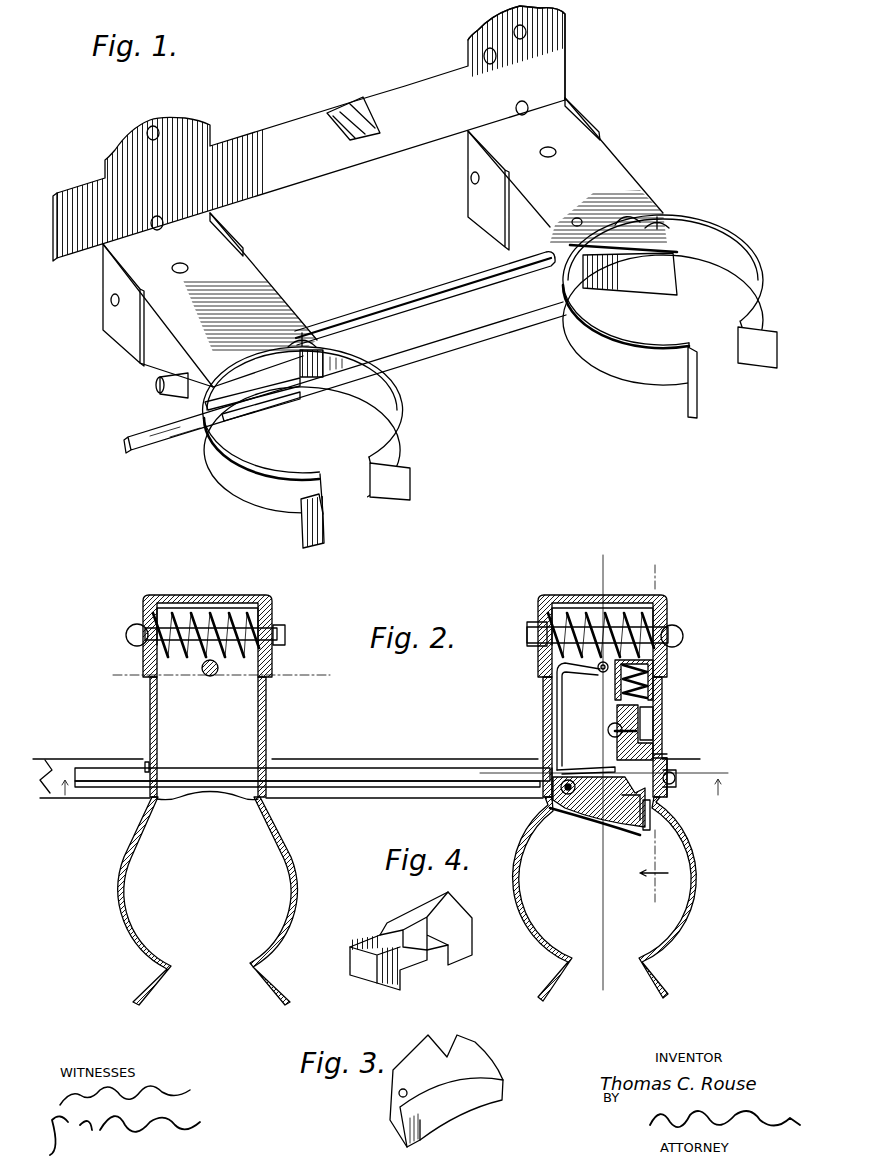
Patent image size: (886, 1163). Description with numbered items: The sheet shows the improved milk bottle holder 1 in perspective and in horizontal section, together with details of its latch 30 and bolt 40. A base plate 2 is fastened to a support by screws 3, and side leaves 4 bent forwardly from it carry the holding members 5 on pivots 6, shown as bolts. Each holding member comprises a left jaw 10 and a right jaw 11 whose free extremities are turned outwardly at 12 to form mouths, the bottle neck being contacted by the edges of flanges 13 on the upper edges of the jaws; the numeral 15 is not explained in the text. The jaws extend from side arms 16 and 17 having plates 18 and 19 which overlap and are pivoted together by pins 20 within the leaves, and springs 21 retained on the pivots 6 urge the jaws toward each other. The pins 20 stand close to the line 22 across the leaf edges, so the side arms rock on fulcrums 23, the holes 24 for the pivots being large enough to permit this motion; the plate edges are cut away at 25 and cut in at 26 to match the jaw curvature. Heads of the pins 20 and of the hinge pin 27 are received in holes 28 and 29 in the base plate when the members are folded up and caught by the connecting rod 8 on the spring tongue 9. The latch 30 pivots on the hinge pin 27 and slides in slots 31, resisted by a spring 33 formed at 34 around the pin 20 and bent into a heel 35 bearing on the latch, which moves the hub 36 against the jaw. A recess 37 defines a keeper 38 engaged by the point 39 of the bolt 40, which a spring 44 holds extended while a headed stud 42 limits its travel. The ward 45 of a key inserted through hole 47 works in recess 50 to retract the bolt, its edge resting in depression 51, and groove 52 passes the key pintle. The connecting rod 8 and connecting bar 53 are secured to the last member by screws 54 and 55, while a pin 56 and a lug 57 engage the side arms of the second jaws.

In FIG. 1, the holder 1 is at (398, 88).
In FIG. 1, the base plate 2 is at (282, 132).
In FIG. 2, the base plate 2 is at (240, 595).
In FIG. 1, the screws 3 is at (560, 27).
In FIG. 1, the side leaves 4 is at (115, 336).
In FIG. 2, the side leaves 4 is at (141, 660).
In FIG. 1, the holding members 5 is at (280, 287).
In FIG. 2, the holding members 5 is at (279, 713).
In FIG. 1, the pivots 6 is at (110, 302).
In FIG. 2, the pivots 6 is at (130, 638).
In FIG. 1, the connecting rod 8 is at (415, 302).
In FIG. 2, the connecting rod 8 is at (328, 752).
In FIG. 1, the spring tongue 9 is at (358, 112).
In FIG. 2, the spring tongue 9 is at (603, 772).
In FIG. 1, the left jaw 10 is at (238, 470).
In FIG. 2, the left jaw 10 is at (122, 897).
In FIG. 1, the right jaw 11 is at (405, 418).
In FIG. 2, the right jaw 11 is at (300, 888).
In FIG. 1, the outwardly turned extremities 12 is at (412, 486).
In FIG. 2, the outwardly turned extremities 12 is at (158, 975).
In FIG. 1, the flanges 13 is at (410, 386).
In FIG. 1, the foot lug 15 is at (740, 335).
In FIG. 1, the side arm 16 is at (158, 362).
In FIG. 2, the side arm 16 is at (150, 733).
In FIG. 2, the side arm 17 is at (268, 731).
In FIG. 1, the plates 18 is at (253, 285).
In FIG. 1, the plates 19 is at (242, 412).
In FIG. 1, the pivot pins 20 is at (172, 268).
In FIG. 2, the pivot pins 20 is at (548, 662).
In FIG. 2, the springs 21 is at (205, 612).
In FIG. 2, the line 22 is at (306, 671).
In FIG. 1, the fulcrums 23 is at (143, 322).
In FIG. 2, the fulcrums 23 is at (147, 686).
In FIG. 2, the holes 24 is at (142, 630).
In FIG. 1, the cut away portions 25 is at (190, 267).
In FIG. 2, the cut away portions 25 is at (177, 612).
In FIG. 1, the cut in places 26 is at (298, 342).
In FIG. 1, the hinge pin 27 is at (592, 226).
In FIG. 2, the hinge pin 27 is at (560, 797).
In FIG. 1, the holes 28 is at (150, 222).
In FIG. 1, the holes 29 is at (484, 55).
In FIG. 2, the holes 29 is at (218, 668).
In FIG. 1, the latch 30 is at (628, 282).
In FIG. 2, the latch 30 is at (600, 818).
In FIG. 3, the latch 30 is at (470, 1090).
In FIG. 1, the slots 31 is at (572, 220).
In FIG. 2, the spring 33 is at (556, 722).
In FIG. 2, the formed portion 34 is at (598, 671).
In FIG. 2, the heel 35 is at (575, 760).
In FIG. 2, the hub 36 is at (565, 812).
In FIG. 3, the hub 36 is at (396, 1116).
In FIG. 2, the recess 37 is at (630, 825).
In FIG. 3, the recess 37 is at (449, 1029).
In FIG. 2, the keeper 38 is at (645, 832).
In FIG. 3, the keeper 38 is at (460, 1038).
In FIG. 2, the point 39 is at (668, 760).
In FIG. 4, the point 39 is at (358, 966).
In FIG. 2, the bolt 40 is at (199, 808).
In FIG. 4, the bolt 40 is at (385, 922).
In FIG. 2, the headed stud 42 is at (608, 737).
In FIG. 2, the spring 44 is at (640, 672).
In FIG. 2, the ward 45 is at (617, 725).
In FIG. 2, the hole 47 is at (652, 700).
In FIG. 2, the recess 50 is at (655, 723).
In FIG. 4, the recess 50 is at (405, 922).
In FIG. 4, the depression 51 is at (458, 930).
In FIG. 4, the groove 52 is at (420, 960).
In FIG. 1, the connecting bar 53 is at (472, 324).
In FIG. 2, the connecting bar 53 is at (400, 780).
In FIG. 2, the screw 54 is at (550, 790).
In FIG. 2, the screw 55 is at (673, 788).
In FIG. 1, the pin 56 is at (158, 390).
In FIG. 2, the pin 56 is at (144, 764).
In FIG. 2, the lug 57 is at (270, 794).